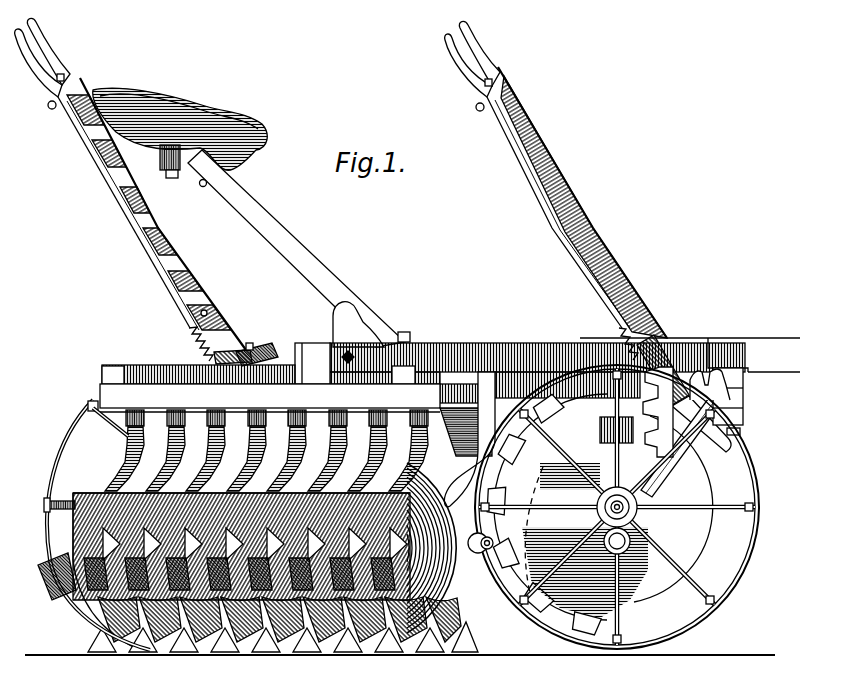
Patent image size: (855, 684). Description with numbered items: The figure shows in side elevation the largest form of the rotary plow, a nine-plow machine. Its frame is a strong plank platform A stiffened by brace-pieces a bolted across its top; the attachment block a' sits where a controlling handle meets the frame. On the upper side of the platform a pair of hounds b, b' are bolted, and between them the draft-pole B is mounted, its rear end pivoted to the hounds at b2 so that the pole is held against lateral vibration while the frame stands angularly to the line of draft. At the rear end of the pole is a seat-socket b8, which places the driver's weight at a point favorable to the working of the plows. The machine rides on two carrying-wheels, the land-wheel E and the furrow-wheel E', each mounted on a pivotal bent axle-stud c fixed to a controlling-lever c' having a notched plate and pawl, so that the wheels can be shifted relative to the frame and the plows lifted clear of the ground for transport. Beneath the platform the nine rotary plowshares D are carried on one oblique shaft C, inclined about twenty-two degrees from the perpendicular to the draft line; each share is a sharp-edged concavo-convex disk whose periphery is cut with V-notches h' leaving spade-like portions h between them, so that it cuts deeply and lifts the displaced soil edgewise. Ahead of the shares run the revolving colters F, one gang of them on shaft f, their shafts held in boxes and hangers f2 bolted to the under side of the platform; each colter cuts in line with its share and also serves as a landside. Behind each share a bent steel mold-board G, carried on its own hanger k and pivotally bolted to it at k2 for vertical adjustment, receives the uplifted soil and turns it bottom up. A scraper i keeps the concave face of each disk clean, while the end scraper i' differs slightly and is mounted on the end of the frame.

The frame platform A is at (270, 398).
The brace-pieces a is at (258, 375).
The handle attachment block a' is at (257, 348).
The hound b is at (306, 355).
The hound b' is at (537, 363).
The pole pivot b2 is at (345, 355).
The seat-socket b8 is at (357, 318).
The draft-pole B is at (690, 386).
The bent axle-stud c is at (682, 433).
The controlling-lever c' is at (341, 191).
The shaft C is at (493, 545).
The rotary plowshares D is at (268, 555).
The land-wheel E is at (97, 524).
The furrow-wheel E' is at (626, 507).
The revolving colters F is at (600, 514).
The colter shaft f is at (629, 546).
The boxes and hangers f2 is at (604, 445).
The mold-board G is at (54, 580).
The spade-like portions h is at (290, 640).
The notches h' is at (488, 637).
The scraper i is at (266, 452).
The end scraper i' is at (469, 439).
The mold-board hanger k is at (239, 574).
The pivot bolt k2 is at (462, 546).